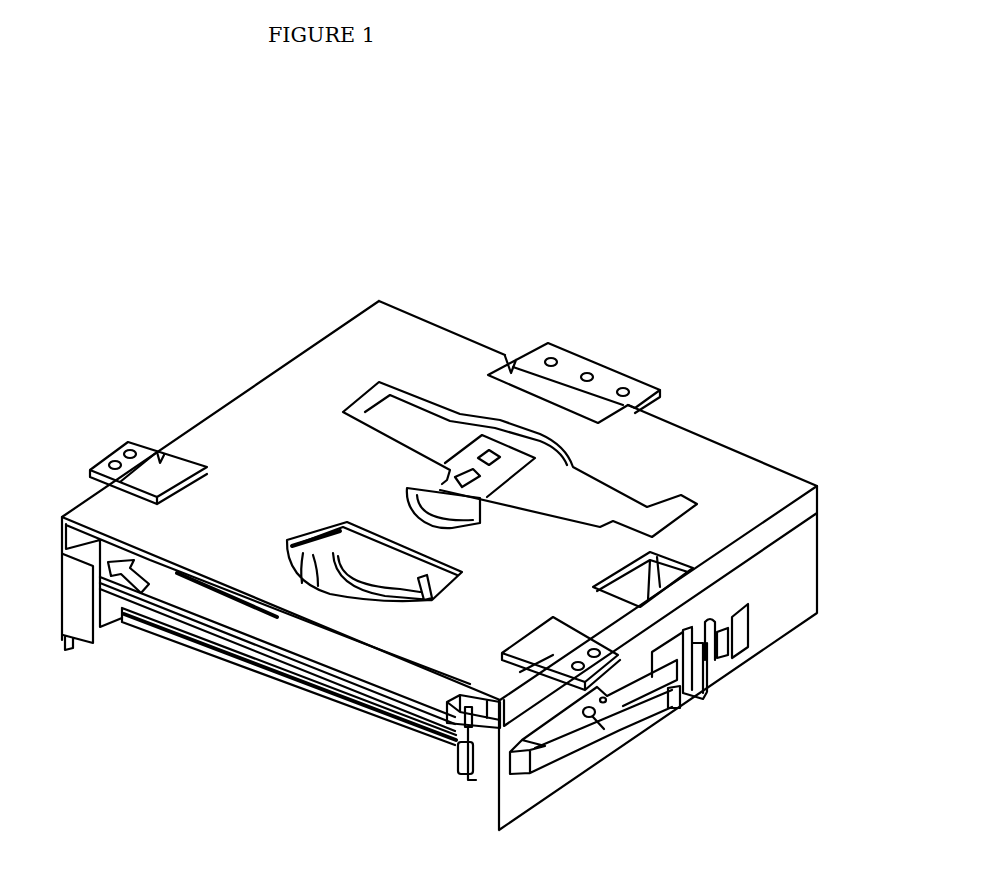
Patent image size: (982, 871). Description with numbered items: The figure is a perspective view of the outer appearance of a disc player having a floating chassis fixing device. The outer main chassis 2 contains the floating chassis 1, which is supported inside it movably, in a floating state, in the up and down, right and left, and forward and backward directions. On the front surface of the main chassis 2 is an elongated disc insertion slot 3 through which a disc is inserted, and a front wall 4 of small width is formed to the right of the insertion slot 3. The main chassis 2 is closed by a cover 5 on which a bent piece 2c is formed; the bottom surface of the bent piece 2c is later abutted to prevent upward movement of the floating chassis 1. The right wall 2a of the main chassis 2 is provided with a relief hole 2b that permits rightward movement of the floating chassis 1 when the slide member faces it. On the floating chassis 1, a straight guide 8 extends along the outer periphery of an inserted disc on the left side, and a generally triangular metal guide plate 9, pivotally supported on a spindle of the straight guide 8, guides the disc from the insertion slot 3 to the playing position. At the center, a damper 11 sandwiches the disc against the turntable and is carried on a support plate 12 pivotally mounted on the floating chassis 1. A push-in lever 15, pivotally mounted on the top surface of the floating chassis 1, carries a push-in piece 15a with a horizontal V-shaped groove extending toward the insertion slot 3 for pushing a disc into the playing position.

The floating chassis 1 is at (207, 627).
The main chassis 2 is at (793, 565).
The right wall 2a is at (777, 620).
The relief hole 2b is at (682, 663).
The bent piece 2c is at (640, 590).
The disc insertion slot 3 is at (303, 643).
The front wall 4 is at (460, 780).
The cover 5 is at (776, 481).
The straight guide 8 is at (115, 580).
The guide plate 9 is at (370, 567).
The damper 11 is at (481, 533).
The support plate 12 is at (407, 413).
The push-in lever 15 is at (456, 706).
The push-in piece 15a is at (468, 713).